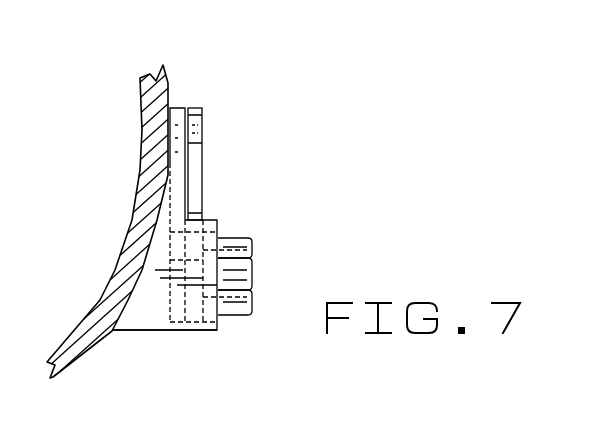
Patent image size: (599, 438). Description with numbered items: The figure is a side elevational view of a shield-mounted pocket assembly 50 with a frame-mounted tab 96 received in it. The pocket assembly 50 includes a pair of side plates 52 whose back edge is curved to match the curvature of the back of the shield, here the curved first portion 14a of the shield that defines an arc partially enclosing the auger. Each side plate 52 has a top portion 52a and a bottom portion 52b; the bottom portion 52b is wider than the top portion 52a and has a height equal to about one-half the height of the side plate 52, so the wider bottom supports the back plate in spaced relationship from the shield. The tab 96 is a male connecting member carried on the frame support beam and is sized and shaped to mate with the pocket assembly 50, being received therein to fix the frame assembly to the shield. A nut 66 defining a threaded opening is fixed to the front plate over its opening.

The first portion of the shield 14a is at (166, 76).
The pocket assembly 50 is at (195, 85).
The side plate 52 is at (150, 340).
The top portion of the side plate 52a is at (177, 165).
The bottom portion of the side plate 52b is at (210, 233).
The tab 96 is at (203, 123).
The nut 66 is at (236, 315).